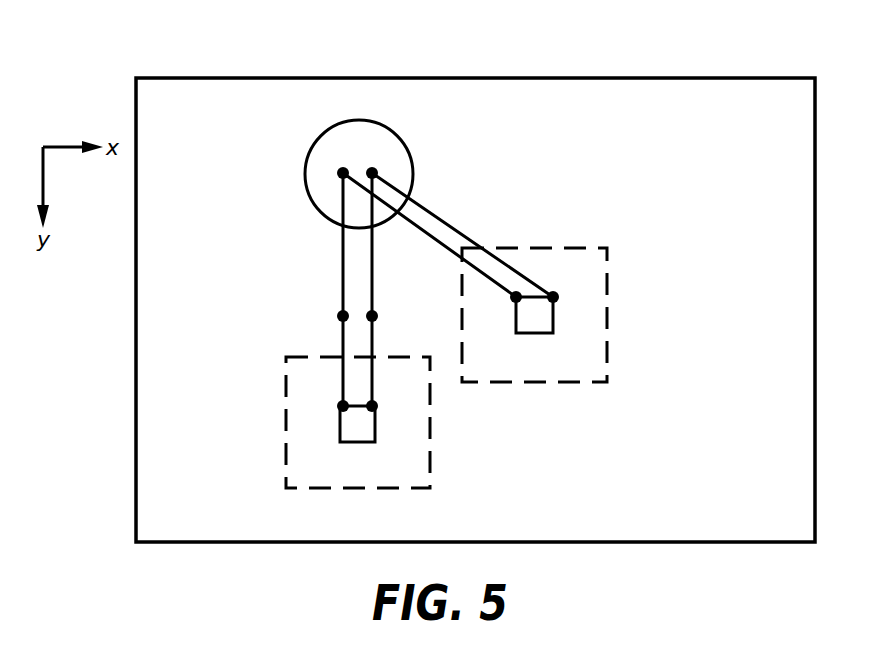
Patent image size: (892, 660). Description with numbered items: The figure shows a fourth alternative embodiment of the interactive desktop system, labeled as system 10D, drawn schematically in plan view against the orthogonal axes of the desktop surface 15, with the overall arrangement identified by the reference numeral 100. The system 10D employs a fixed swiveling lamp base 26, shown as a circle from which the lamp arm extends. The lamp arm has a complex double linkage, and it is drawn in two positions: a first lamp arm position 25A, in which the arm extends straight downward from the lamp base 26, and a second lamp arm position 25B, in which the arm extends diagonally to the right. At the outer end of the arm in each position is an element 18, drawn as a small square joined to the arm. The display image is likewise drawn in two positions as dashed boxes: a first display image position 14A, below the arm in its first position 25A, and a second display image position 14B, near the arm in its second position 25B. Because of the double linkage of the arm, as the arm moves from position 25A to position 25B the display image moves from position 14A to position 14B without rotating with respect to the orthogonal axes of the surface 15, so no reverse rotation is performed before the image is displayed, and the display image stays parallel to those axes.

The coordinate system / assembly 100 is at (203, 56).
The surface 15 is at (475, 280).
The fixed swiveling lamp base 26 is at (316, 147).
The interactive desktop system 10D is at (434, 166).
The lamp arm position 25A is at (341, 265).
The lamp arm position 25B is at (450, 226).
The component pad 18 is at (338, 425).
The display image position 14A is at (286, 447).
The display image position 14B is at (592, 248).